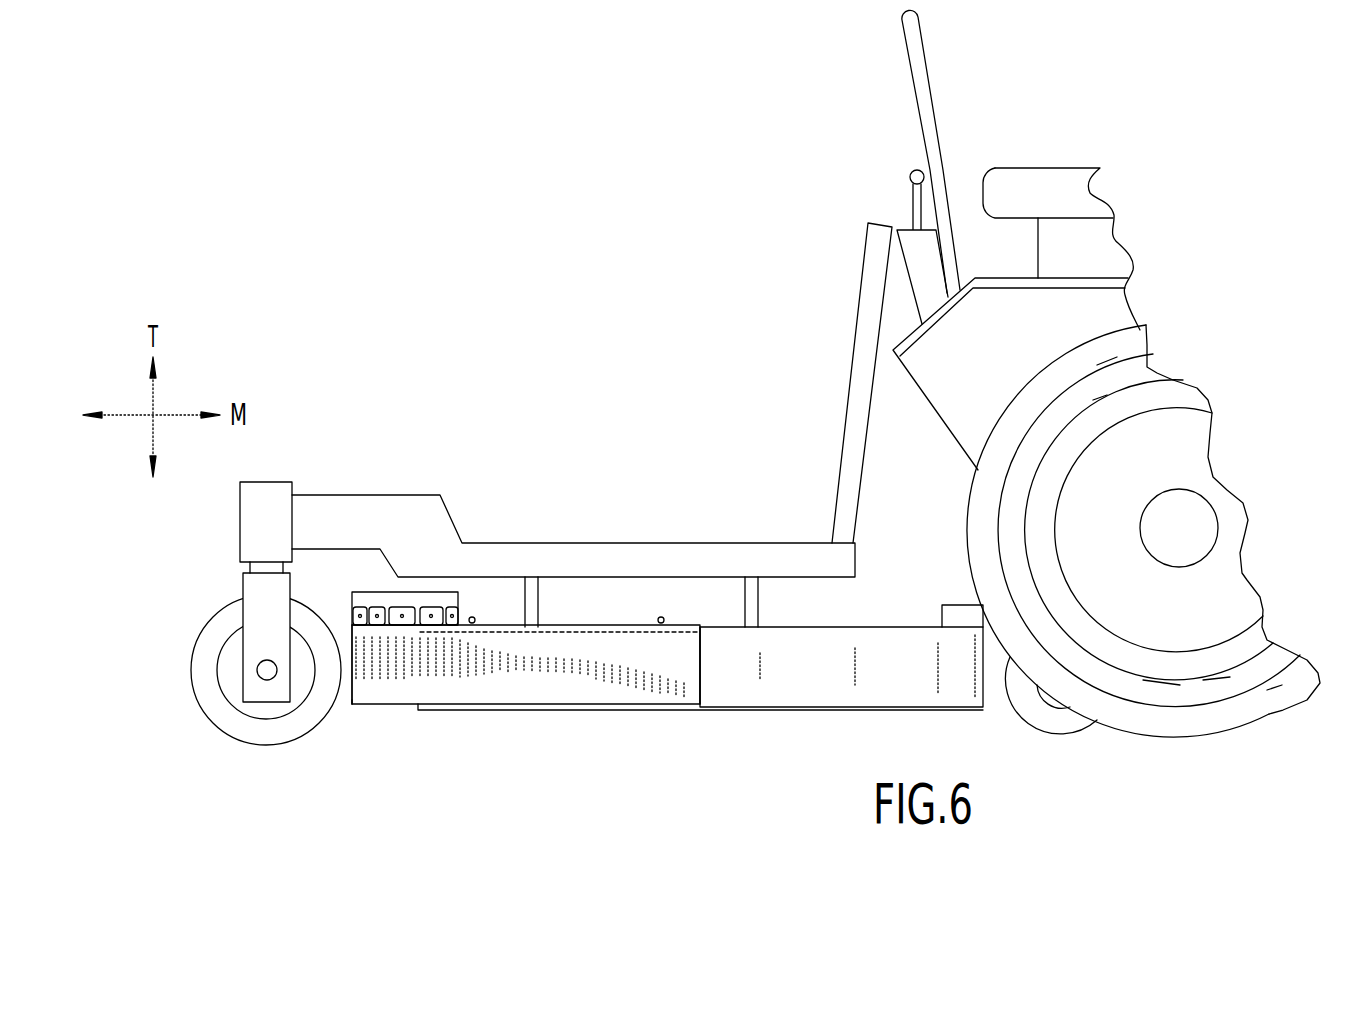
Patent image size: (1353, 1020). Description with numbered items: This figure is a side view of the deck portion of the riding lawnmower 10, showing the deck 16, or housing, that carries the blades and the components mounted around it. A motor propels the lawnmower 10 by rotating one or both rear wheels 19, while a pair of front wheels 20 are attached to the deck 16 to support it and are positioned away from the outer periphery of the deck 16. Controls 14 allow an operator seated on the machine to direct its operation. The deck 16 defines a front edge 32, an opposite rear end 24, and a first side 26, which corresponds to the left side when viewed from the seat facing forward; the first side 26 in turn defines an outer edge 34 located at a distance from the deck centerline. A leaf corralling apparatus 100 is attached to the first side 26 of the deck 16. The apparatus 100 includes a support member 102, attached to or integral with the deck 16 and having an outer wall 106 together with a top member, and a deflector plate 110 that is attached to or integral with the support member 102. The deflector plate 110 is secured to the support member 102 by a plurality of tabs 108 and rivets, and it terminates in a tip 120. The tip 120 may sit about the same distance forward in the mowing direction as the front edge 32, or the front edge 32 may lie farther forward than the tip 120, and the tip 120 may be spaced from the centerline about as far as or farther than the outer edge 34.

The lawnmower 10 is at (305, 152).
The controls 14 is at (958, 125).
The deck 16 is at (837, 627).
The rear wheels 19 is at (1150, 362).
The front wheels 20 is at (208, 652).
The rear end 24 is at (993, 677).
The first side 26 is at (757, 723).
The front edge 32 is at (407, 678).
The outer edge 34 is at (710, 687).
The leaf corralling apparatus 100 is at (370, 743).
The support member 102 is at (460, 682).
The outer wall 106 is at (533, 685).
The tabs 108 is at (410, 613).
The deflector plate 110 is at (395, 600).
The tip 120 is at (338, 707).